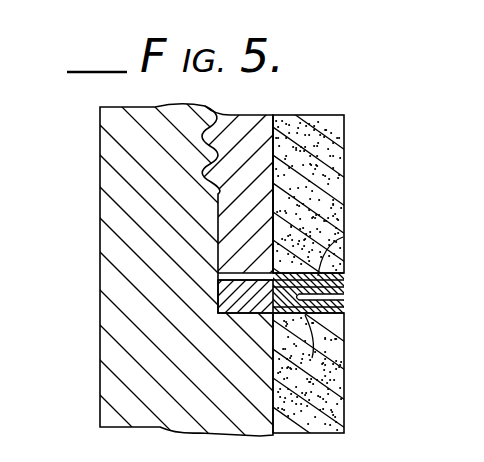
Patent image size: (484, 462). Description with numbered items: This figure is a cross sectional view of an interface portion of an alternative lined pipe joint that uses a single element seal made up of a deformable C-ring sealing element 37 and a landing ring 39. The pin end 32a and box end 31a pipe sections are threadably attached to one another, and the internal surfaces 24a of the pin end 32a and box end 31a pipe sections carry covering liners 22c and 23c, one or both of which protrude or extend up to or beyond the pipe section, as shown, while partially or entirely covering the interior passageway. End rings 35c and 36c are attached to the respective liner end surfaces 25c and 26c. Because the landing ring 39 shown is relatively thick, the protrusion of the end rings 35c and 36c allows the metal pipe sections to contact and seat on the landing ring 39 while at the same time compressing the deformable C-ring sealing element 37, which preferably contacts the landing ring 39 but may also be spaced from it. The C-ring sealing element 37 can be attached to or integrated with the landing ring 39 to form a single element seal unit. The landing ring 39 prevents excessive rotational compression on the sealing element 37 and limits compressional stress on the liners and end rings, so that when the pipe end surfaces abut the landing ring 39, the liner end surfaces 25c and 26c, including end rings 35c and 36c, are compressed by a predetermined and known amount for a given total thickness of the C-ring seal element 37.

The box end pipe section 31a is at (103, 155).
The pin end pipe section 32a is at (250, 117).
The internal surfaces 24a is at (273, 165).
The covering liner 22c is at (343, 200).
The covering liner 23c is at (343, 405).
The liner end surface 25c is at (343, 237).
The liner end surface 26c is at (312, 358).
The end ring 35c is at (343, 282).
The end ring 36c is at (343, 312).
The deformable C-ring sealing element 37 is at (343, 293).
The landing ring 39 is at (237, 313).